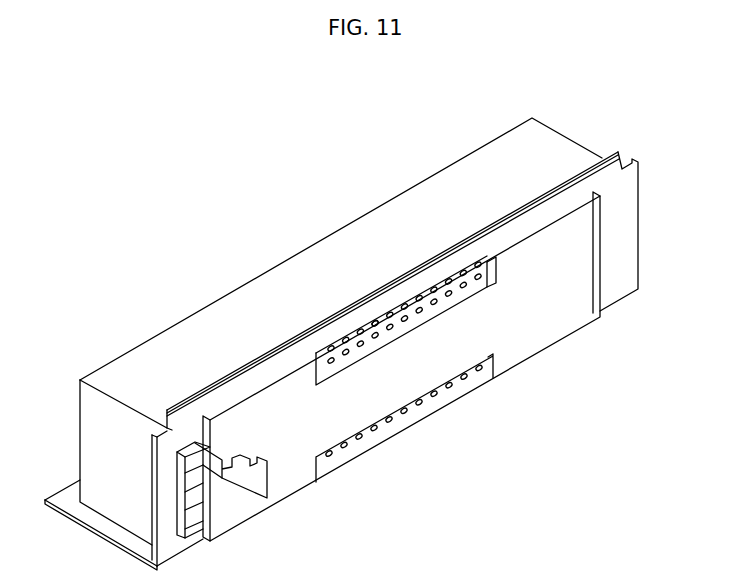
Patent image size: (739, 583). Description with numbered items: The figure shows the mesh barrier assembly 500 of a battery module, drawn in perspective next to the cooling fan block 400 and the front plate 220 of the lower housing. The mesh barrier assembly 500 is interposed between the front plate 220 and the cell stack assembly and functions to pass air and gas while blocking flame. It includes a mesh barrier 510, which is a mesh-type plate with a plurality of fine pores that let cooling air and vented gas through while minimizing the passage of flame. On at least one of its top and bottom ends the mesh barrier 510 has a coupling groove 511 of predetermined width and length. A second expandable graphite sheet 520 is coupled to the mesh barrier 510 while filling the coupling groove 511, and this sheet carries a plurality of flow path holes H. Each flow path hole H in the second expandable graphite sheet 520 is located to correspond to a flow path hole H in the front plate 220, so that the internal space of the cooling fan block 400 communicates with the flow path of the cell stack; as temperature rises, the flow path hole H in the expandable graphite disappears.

The cooling fan block 400 is at (517, 137).
The front plate 220 is at (627, 214).
The mesh barrier assembly 500 is at (426, 327).
The mesh barrier 510 is at (401, 327).
The coupling groove 511 is at (480, 253).
The second expandable graphite sheet 520 is at (428, 292).
The flow path hole H is at (375, 321).